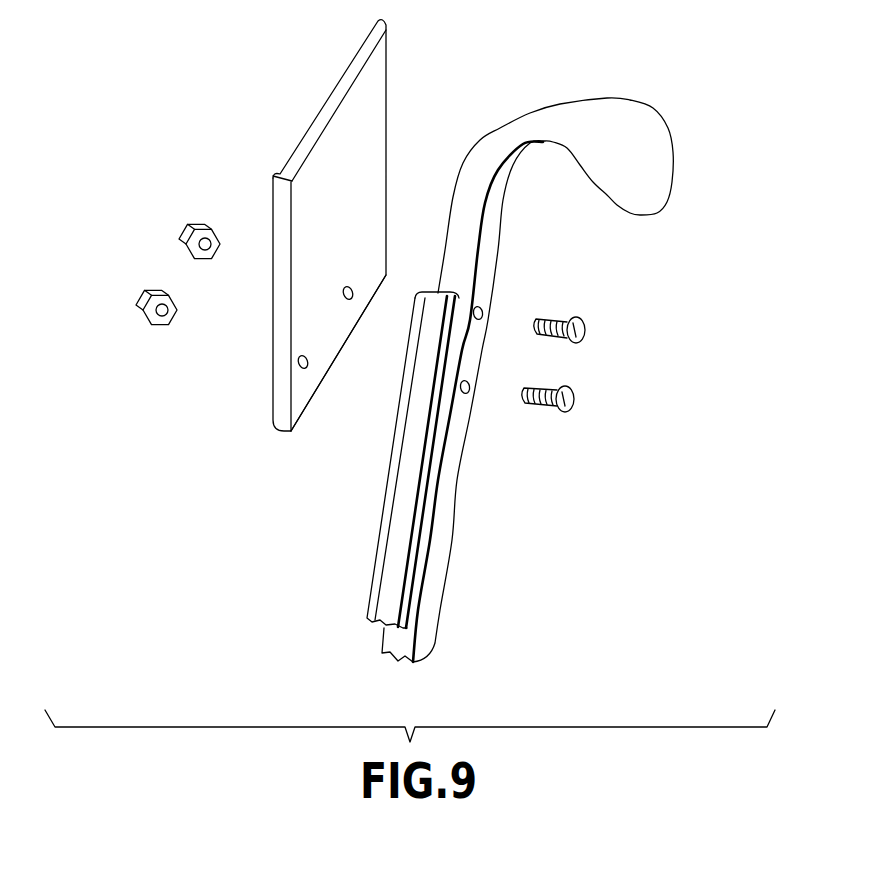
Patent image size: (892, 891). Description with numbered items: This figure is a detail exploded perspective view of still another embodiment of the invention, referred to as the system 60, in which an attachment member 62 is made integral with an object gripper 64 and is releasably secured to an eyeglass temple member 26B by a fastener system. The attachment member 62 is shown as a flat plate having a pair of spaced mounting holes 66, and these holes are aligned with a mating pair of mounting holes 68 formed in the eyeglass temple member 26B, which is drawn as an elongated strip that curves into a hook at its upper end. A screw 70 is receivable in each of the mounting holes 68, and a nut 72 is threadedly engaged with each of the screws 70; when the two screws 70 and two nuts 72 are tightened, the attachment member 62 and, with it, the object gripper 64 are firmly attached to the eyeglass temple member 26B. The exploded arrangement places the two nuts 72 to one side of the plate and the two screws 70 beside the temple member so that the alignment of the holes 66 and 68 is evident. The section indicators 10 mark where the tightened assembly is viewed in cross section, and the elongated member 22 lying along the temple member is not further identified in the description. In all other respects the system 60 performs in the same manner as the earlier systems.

The section line for FIG. 10 is at (340, 498).
The hanger bar 22 is at (397, 558).
The eyeglass temple member 26B is at (439, 637).
The system 60 is at (203, 186).
The attachment member 62 is at (305, 377).
The object gripper 64 is at (355, 233).
The mounting holes 66 is at (352, 299).
The mounting holes 68 is at (482, 316).
The screw 70 is at (567, 385).
The nut 72 is at (185, 232).